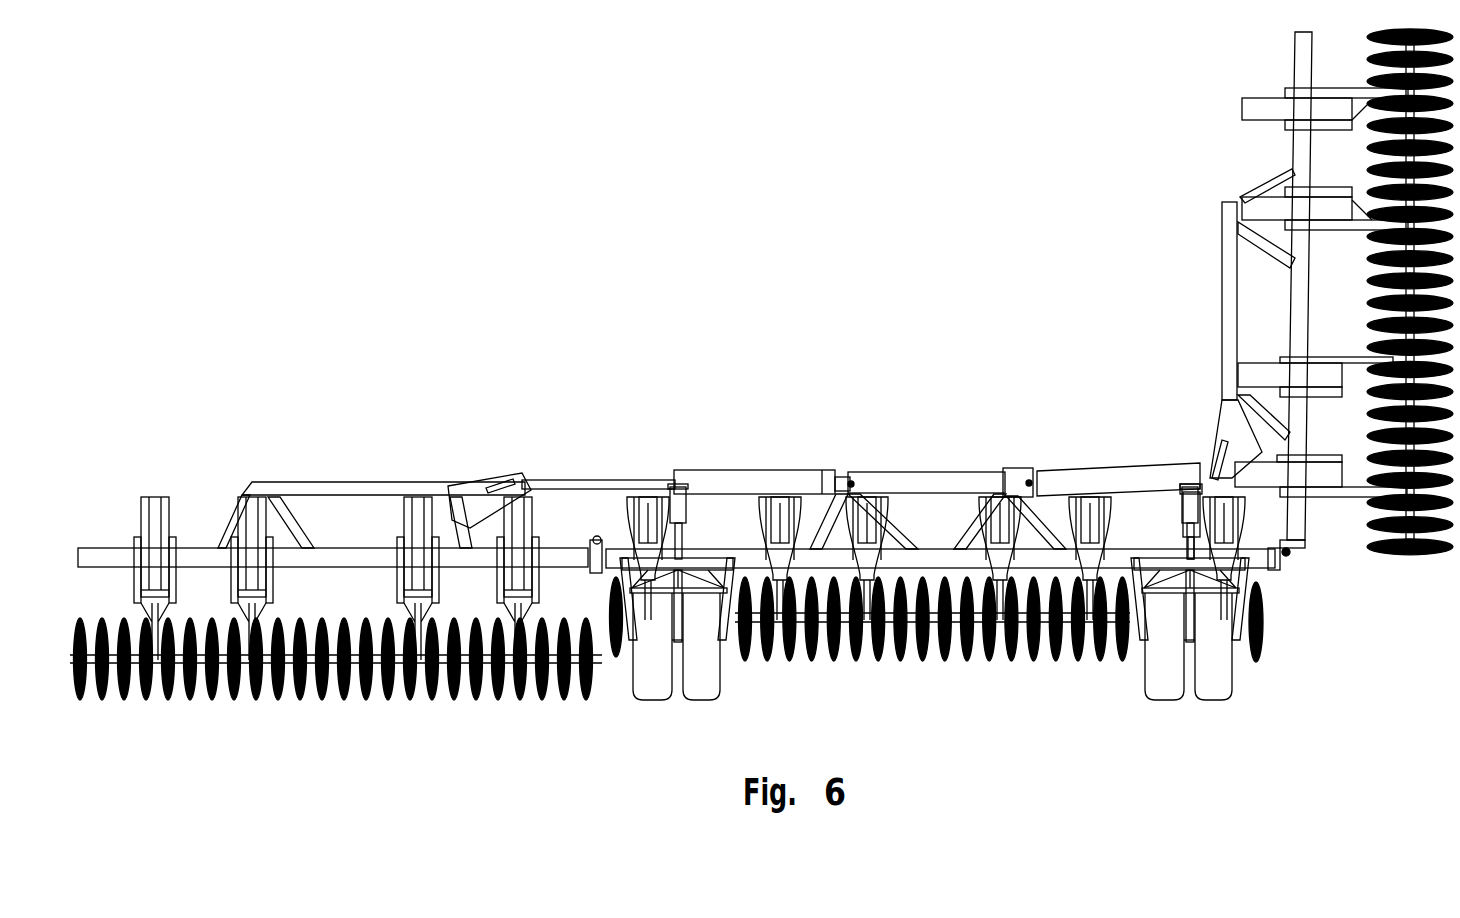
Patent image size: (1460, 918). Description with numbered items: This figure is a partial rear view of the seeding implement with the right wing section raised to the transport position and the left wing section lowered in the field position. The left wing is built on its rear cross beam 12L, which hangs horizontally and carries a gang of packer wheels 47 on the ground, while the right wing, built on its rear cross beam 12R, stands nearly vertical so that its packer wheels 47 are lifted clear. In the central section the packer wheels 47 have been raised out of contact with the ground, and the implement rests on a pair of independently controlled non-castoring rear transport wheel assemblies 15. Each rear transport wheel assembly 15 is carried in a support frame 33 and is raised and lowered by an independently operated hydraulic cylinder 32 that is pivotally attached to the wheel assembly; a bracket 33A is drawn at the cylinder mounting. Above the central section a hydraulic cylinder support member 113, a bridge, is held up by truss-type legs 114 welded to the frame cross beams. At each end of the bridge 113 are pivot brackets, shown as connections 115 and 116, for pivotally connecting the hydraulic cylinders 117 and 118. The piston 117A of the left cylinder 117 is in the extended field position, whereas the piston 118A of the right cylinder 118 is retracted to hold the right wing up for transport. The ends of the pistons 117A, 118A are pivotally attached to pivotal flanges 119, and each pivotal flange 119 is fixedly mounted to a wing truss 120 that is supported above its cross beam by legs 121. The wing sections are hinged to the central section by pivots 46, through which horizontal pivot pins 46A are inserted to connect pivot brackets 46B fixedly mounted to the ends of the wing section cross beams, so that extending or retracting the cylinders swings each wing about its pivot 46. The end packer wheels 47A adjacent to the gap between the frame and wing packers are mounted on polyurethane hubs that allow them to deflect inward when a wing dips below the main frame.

The left wing section cross beam 12L is at (308, 567).
The right wing section cross beam 12R is at (1300, 326).
The rear transport wheel assembly 15 is at (728, 690).
The hydraulic cylinder 32 is at (1183, 515).
The support frame for transport wheels 33 is at (1140, 640).
The cylinder mounting bracket 33A is at (1185, 535).
The pivot 46 is at (1278, 566).
The horizontal pivot pin 46A is at (1291, 553).
The pivot bracket 46B is at (1295, 548).
The packer wheel 47 is at (358, 694).
The end packer wheel 47A is at (607, 660).
The hydraulic cylinder support member 113 is at (945, 490).
The truss-type leg 114 is at (832, 527).
The pivot pin 115 is at (855, 486).
The pivot connection 116 is at (1030, 478).
The hydraulic cylinder 117 is at (722, 490).
The piston 117A is at (558, 482).
The hydraulic cylinder 118 is at (1125, 490).
The piston 118A is at (1218, 470).
The pivotal flange 119 is at (468, 492).
The wing truss 120 is at (378, 488).
The leg 121 is at (292, 522).